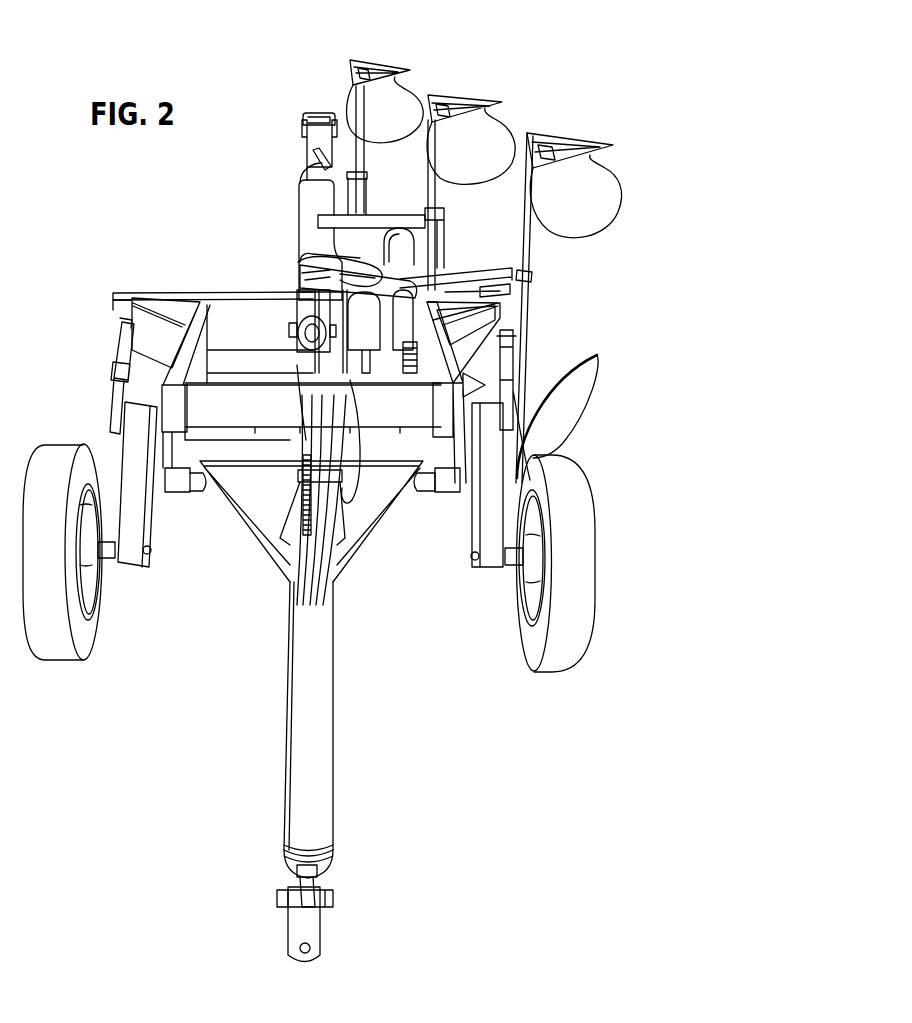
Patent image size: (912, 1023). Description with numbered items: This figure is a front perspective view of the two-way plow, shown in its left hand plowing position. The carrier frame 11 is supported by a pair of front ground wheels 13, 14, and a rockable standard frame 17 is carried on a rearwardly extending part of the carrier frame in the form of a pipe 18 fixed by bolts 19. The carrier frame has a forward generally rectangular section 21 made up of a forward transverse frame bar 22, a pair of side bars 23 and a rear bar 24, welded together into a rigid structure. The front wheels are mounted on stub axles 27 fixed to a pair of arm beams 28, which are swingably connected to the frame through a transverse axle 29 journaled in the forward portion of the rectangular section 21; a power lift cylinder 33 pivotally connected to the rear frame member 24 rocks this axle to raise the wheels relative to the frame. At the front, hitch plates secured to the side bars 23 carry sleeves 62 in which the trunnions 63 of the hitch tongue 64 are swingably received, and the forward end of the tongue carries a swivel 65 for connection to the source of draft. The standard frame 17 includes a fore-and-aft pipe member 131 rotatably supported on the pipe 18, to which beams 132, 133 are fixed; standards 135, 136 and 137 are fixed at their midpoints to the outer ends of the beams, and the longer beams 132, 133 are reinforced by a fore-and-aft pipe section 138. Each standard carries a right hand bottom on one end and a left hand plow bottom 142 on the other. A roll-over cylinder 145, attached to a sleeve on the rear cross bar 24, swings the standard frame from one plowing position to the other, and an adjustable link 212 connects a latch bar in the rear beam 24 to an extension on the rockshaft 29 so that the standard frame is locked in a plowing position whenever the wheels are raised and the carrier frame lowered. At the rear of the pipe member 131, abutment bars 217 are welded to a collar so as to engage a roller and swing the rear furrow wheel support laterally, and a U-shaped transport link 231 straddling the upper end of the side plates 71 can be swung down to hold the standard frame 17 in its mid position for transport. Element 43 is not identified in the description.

The carrier frame 11 is at (126, 277).
The front ground wheel 13 is at (62, 650).
The front ground wheel 14 is at (559, 658).
The standard frame 17 is at (291, 212).
The pipe 18 is at (298, 343).
The bolts 19 is at (289, 330).
The forward generally rectangular section 21 is at (221, 295).
The forward transverse frame bar 22 is at (255, 418).
The side bars 23 is at (186, 341).
The rear bar 24 is at (251, 297).
The stub axles 27 is at (110, 559).
The arm beams 28 is at (137, 442).
The transverse axle 29 is at (119, 412).
The cylinder 33 is at (370, 355).
The mounting plate 43 is at (423, 331).
The sleeves 62 is at (178, 490).
The trunnions 63 is at (200, 490).
The hitch tongue 64 is at (328, 740).
The swivel 65 is at (318, 933).
The side plates 71 is at (311, 148).
The pipe member 131 is at (305, 233).
The beam 132 is at (497, 283).
The beam 133 is at (403, 220).
The standard 135 is at (530, 255).
The standard 136 is at (437, 201).
The standard 137 is at (359, 155).
The pipe section 138 is at (384, 242).
The left hand plow bottoms 142 is at (378, 72).
The roll-over cylinder 145 is at (426, 286).
The adjustable link 212 is at (515, 357).
The abutment bars 217 is at (313, 160).
The transport link 231 is at (314, 112).